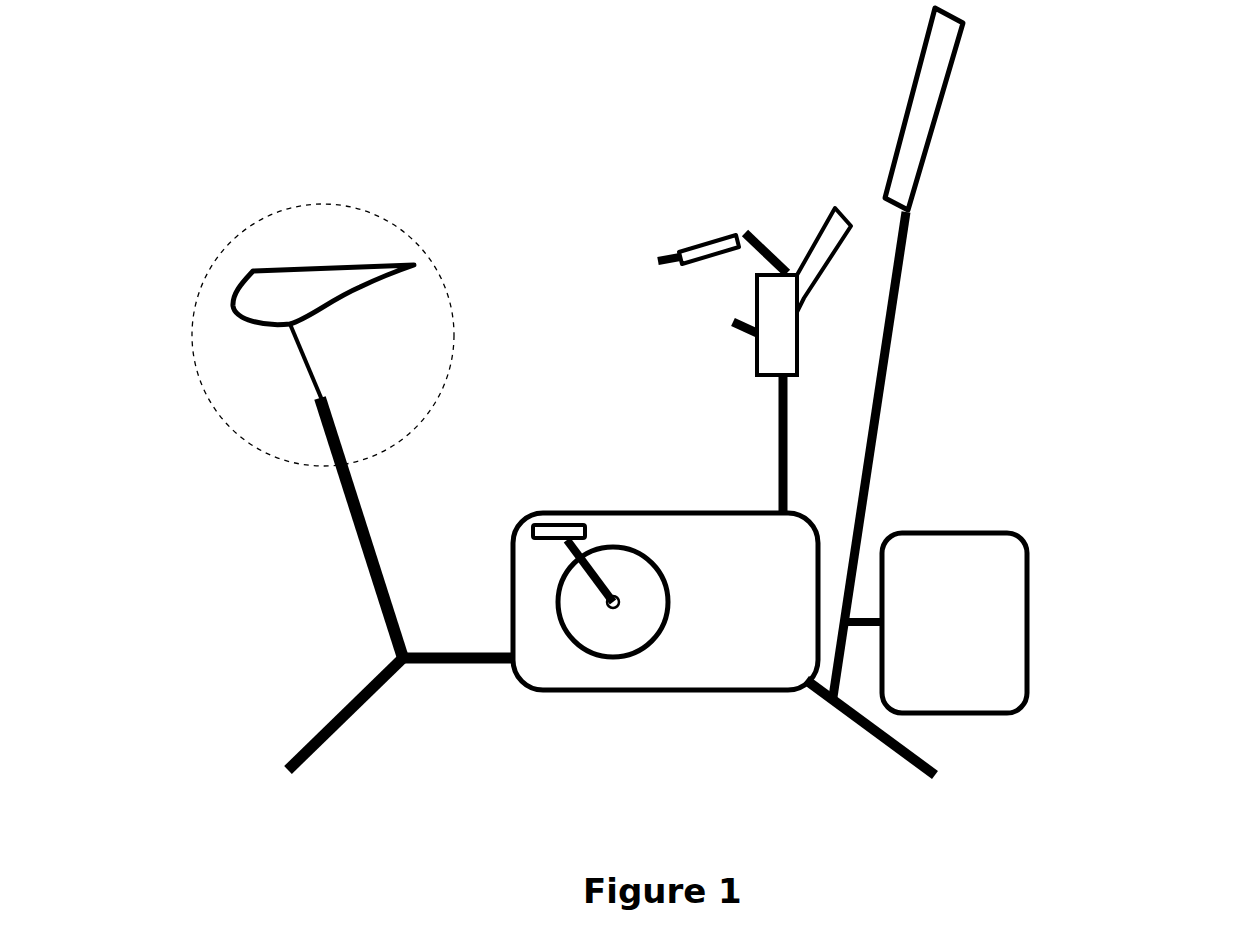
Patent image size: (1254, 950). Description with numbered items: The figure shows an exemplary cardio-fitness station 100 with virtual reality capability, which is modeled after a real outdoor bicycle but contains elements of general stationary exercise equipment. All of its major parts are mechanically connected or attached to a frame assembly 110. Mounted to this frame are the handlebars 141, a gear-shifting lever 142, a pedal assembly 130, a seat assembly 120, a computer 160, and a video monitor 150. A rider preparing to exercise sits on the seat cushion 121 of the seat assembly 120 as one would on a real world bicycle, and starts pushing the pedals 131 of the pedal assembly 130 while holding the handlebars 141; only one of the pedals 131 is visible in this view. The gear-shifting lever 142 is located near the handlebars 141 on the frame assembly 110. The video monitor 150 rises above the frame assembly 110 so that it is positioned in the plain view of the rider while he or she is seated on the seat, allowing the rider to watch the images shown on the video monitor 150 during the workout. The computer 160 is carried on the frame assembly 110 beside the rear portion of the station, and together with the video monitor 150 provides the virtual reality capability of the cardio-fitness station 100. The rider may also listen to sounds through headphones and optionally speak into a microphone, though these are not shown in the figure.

The cardio-fitness station 100 is at (1100, 344).
The frame assembly 110 is at (325, 722).
The seat assembly 120 is at (360, 208).
The seat cushion 121 is at (268, 297).
The pedal assembly 130 is at (650, 672).
The pedals 131 is at (545, 518).
The handlebars 141 is at (680, 250).
The gear-shifting lever 142 is at (732, 325).
The video monitor 150 is at (923, 110).
The computer 160 is at (1007, 530).